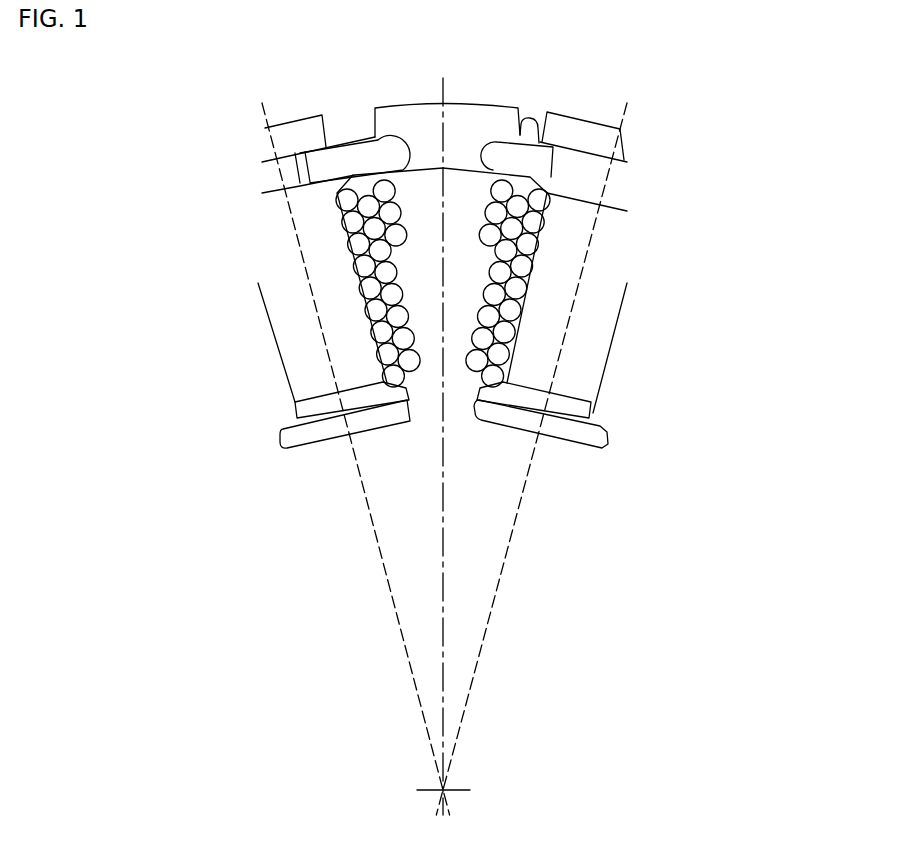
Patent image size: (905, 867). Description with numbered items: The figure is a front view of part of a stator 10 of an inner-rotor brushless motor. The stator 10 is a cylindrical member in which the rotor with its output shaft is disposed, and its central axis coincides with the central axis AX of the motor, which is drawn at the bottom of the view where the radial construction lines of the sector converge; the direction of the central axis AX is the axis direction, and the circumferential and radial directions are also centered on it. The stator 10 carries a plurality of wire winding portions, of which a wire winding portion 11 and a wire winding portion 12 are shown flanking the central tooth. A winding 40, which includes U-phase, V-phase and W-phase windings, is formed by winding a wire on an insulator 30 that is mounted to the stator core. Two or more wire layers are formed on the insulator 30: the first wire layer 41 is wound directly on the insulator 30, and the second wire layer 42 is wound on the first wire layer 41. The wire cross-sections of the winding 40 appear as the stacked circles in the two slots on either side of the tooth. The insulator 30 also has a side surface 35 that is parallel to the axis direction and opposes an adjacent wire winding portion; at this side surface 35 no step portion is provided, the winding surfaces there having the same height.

The stator 10 is at (746, 52).
The wire winding portion 11 is at (279, 459).
The wire winding portion 12 is at (612, 459).
The insulator 30 is at (262, 318).
The side surface 35 is at (284, 413).
The winding 40 is at (337, 247).
The first wire layer 41 is at (409, 403).
The second wire layer 42 is at (423, 386).
The central axis AX is at (443, 790).